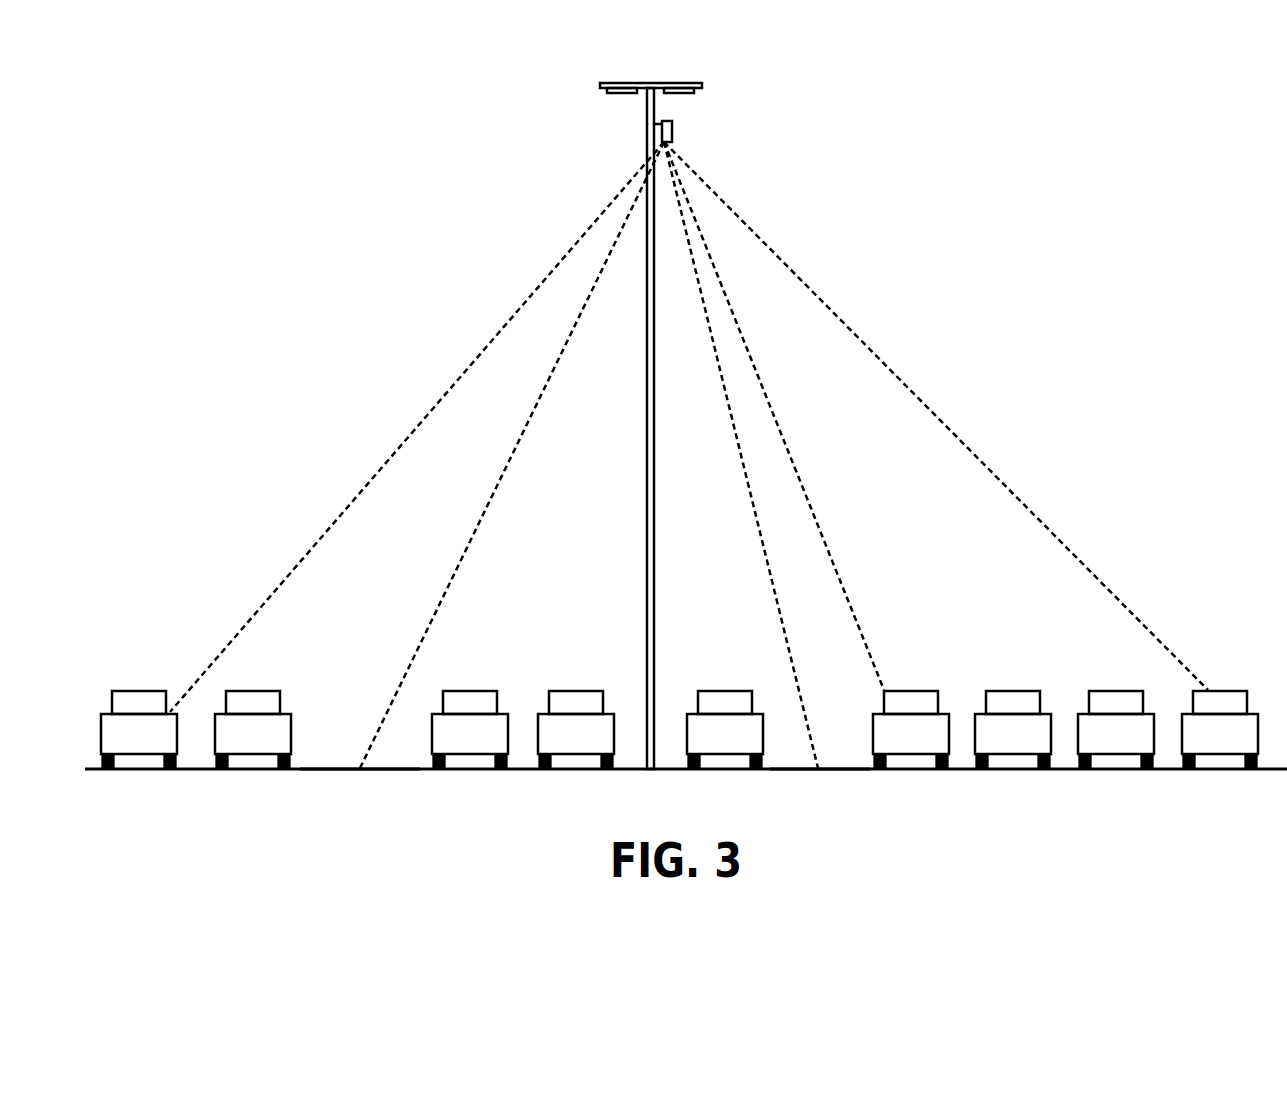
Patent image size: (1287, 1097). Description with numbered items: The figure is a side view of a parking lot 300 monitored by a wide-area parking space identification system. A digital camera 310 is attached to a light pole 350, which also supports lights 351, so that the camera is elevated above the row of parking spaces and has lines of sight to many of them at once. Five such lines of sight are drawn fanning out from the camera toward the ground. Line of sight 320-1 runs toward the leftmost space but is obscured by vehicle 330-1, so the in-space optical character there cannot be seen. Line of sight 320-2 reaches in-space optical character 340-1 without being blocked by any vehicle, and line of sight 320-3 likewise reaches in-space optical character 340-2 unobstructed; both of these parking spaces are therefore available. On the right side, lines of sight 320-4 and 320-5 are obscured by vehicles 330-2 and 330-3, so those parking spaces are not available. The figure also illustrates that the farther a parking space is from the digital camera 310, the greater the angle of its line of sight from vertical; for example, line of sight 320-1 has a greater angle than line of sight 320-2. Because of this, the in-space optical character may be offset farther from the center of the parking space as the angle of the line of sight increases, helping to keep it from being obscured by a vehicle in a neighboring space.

The parking lot 300 is at (270, 86).
The light pole 350 is at (653, 83).
The lights 351 is at (691, 84).
The digital camera 310 is at (672, 136).
The line of sight 320-1 is at (465, 371).
The line of sight 320-2 is at (497, 482).
The line of sight 320-3 is at (752, 498).
The line of sight 320-4 is at (772, 404).
The line of sight 320-5 is at (770, 242).
The vehicle 330-1 is at (105, 690).
The vehicle 330-2 is at (925, 690).
The vehicle 330-3 is at (1235, 690).
The in-space optical character 340-1 is at (340, 768).
The in-space optical character 340-2 is at (826, 768).